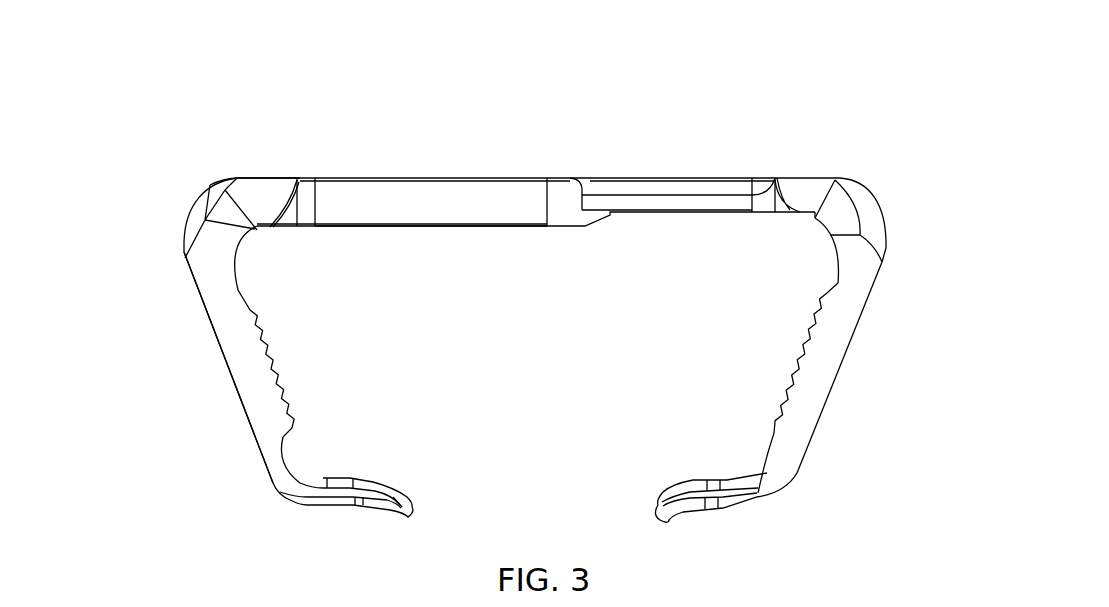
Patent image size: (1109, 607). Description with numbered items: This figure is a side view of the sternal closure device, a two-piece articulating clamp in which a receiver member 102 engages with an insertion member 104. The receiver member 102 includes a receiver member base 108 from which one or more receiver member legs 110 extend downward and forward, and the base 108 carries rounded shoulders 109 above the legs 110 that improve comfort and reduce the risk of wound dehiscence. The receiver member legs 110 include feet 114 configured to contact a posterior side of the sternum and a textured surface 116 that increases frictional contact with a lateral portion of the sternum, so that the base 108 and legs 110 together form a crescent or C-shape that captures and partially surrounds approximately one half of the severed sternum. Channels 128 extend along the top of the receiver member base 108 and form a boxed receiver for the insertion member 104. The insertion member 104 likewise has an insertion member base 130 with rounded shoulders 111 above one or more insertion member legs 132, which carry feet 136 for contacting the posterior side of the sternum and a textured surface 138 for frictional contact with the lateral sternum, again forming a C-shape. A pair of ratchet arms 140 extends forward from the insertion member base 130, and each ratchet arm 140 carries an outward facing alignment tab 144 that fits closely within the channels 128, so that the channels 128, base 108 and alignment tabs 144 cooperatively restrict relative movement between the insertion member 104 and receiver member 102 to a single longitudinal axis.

The receiver member 102 is at (930, 247).
The insertion member 104 is at (148, 213).
The receiver member base 108 is at (618, 203).
The rounded shoulders 109 is at (858, 190).
The receiver member legs 110 is at (860, 293).
The rounded shoulders 111 is at (208, 207).
The feet 114 is at (693, 488).
The textured surface 116 is at (812, 345).
The channels 128 is at (490, 202).
The insertion member base 130 is at (220, 208).
The insertion member legs 132 is at (243, 373).
The feet 136 is at (372, 490).
The textured surface 138 is at (257, 333).
The ratchet arms 140 is at (408, 187).
The alignment tab 144 is at (352, 202).